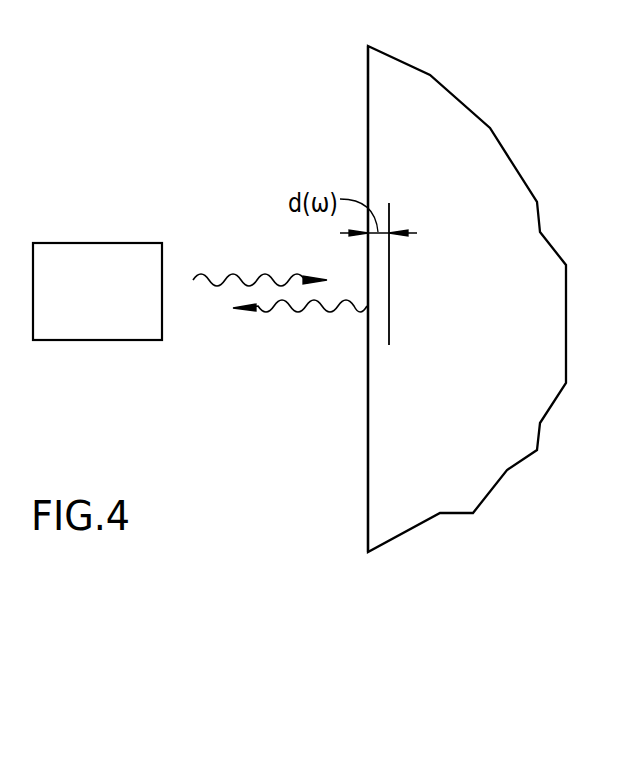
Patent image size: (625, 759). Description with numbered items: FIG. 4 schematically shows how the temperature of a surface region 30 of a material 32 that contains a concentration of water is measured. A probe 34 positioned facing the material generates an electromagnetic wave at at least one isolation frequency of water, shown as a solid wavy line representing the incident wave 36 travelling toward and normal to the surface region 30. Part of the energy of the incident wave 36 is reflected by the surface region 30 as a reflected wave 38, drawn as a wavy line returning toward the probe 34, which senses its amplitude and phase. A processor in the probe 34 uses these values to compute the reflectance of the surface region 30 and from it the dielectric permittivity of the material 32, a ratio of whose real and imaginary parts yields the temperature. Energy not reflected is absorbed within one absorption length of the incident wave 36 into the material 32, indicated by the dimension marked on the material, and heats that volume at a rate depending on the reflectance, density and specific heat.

The surface region 30 is at (367, 402).
The material 32 is at (493, 375).
The probe 34 is at (115, 299).
The incident wave 36 is at (268, 273).
The reflected wave 38 is at (318, 311).